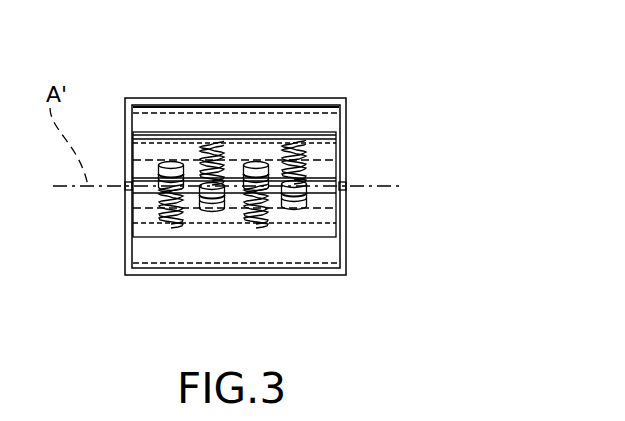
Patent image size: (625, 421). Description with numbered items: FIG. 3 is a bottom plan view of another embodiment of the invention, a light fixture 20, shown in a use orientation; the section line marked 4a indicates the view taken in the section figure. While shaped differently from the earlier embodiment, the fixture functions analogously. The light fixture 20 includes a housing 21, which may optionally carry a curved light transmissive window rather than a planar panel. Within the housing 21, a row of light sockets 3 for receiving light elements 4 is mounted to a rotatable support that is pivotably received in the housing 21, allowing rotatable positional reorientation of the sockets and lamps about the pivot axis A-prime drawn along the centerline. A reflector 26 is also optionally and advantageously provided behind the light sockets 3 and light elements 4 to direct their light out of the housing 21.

The light fixture 20 is at (416, 80).
The housing 21 is at (343, 252).
The reflector 26 is at (328, 153).
The light sockets 3 is at (172, 162).
The light elements 4 is at (212, 147).
The section line 4a- 4a is at (233, 88).